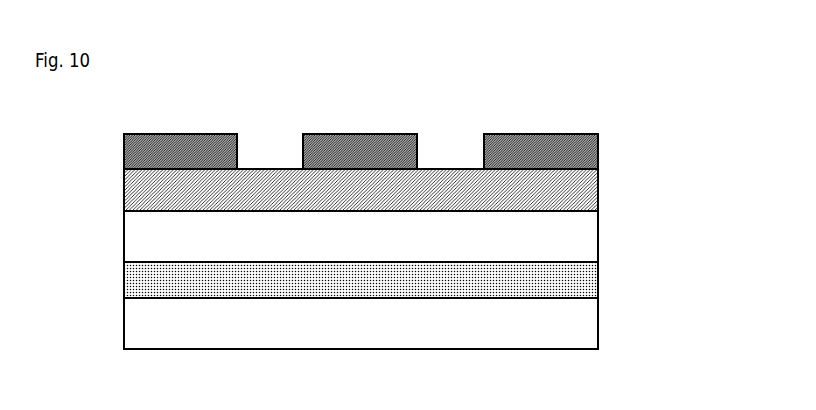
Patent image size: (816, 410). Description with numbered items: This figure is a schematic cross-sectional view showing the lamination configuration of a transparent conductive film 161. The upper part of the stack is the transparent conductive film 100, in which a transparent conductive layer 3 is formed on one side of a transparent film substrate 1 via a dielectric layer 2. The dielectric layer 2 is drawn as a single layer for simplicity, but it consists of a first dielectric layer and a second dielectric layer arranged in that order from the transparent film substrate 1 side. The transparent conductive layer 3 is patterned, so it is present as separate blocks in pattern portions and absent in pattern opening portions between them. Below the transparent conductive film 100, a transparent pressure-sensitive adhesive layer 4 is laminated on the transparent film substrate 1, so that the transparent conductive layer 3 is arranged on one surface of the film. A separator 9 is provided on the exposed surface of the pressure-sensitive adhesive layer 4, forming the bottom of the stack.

The transparent conductive film 161 is at (585, 123).
The transparent conductive film 100 is at (693, 203).
The transparent film substrate 1 is at (583, 229).
The dielectric layer 2 is at (588, 186).
The transparent conductive layer 3 is at (588, 148).
The pressure-sensitive adhesive layer 4 is at (584, 277).
The separator 9 is at (584, 317).